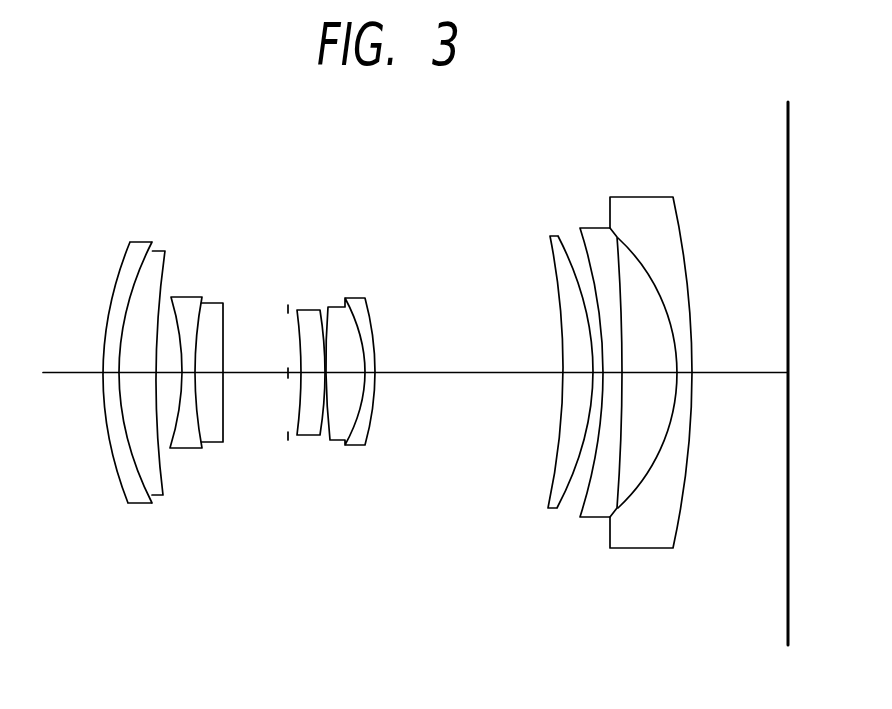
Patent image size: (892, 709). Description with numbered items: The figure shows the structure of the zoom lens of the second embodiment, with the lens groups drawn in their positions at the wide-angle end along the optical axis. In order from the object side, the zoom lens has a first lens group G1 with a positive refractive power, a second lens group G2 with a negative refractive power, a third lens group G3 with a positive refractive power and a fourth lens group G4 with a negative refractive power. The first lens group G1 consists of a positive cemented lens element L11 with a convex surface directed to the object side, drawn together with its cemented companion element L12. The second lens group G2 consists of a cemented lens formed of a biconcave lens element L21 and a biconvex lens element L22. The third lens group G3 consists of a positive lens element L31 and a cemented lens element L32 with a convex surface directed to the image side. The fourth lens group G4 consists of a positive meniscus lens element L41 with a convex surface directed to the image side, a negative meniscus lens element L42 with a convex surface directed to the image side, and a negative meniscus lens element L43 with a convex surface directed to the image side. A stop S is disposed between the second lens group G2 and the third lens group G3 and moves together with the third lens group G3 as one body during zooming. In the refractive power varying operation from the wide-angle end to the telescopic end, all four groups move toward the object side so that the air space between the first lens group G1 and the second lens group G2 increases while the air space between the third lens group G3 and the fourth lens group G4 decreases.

The first lens group G1 is at (170, 235).
The second lens group G2 is at (228, 235).
The third lens group G3 is at (377, 235).
The fourth lens group G4 is at (692, 187).
The positive cemented lens element L11 is at (137, 502).
The second lens of first lens group L12 is at (160, 498).
The biconcave lens element L21 is at (185, 443).
The biconvex lens element L22 is at (213, 436).
The positive lens element L31 is at (308, 432).
The cemented lens element L32 is at (348, 446).
The positive meniscus lens element L41 is at (552, 505).
The negative meniscus lens element L42 is at (595, 508).
The negative meniscus lens element L43 is at (642, 552).
The stop S is at (285, 308).